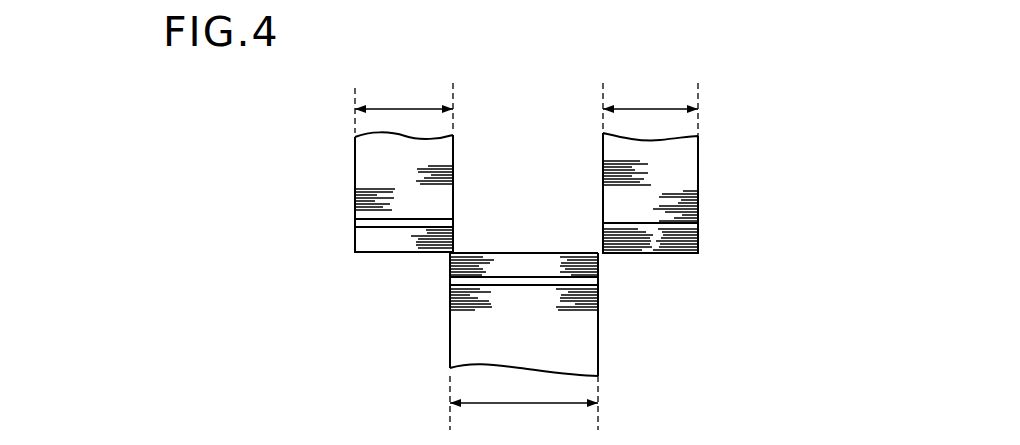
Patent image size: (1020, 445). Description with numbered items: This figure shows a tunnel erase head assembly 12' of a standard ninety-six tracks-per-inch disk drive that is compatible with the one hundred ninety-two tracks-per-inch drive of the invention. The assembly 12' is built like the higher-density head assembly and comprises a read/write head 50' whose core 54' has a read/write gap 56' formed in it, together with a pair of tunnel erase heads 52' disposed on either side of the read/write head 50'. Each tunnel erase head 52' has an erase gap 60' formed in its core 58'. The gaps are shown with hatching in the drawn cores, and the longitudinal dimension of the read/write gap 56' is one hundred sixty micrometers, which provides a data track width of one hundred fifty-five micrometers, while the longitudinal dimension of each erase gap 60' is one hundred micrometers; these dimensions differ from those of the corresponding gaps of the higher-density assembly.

The tunnel erase head assembly 12' is at (573, 256).
The tunnel erase heads 52' is at (523, 192).
The erase gap 60' is at (522, 216).
The core 58' is at (529, 164).
The read/write gap 56' is at (524, 238).
The read/write head 50' is at (563, 314).
The core 54' is at (563, 359).